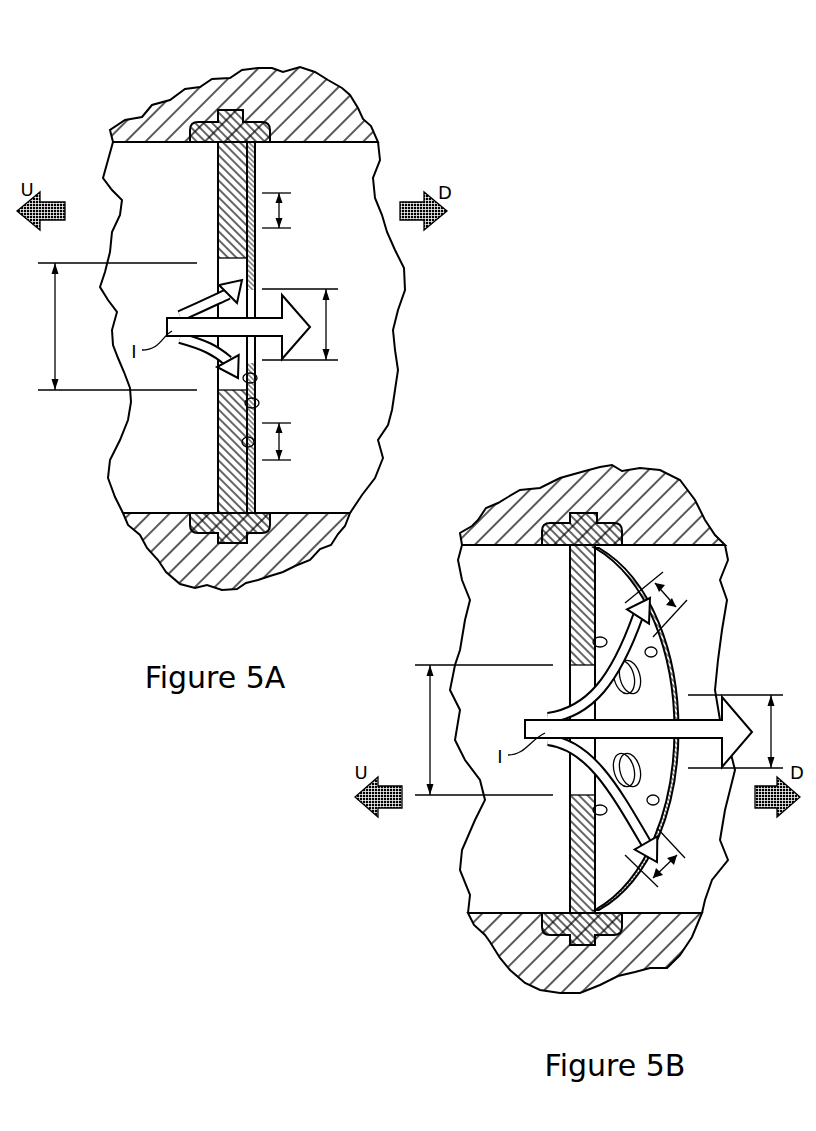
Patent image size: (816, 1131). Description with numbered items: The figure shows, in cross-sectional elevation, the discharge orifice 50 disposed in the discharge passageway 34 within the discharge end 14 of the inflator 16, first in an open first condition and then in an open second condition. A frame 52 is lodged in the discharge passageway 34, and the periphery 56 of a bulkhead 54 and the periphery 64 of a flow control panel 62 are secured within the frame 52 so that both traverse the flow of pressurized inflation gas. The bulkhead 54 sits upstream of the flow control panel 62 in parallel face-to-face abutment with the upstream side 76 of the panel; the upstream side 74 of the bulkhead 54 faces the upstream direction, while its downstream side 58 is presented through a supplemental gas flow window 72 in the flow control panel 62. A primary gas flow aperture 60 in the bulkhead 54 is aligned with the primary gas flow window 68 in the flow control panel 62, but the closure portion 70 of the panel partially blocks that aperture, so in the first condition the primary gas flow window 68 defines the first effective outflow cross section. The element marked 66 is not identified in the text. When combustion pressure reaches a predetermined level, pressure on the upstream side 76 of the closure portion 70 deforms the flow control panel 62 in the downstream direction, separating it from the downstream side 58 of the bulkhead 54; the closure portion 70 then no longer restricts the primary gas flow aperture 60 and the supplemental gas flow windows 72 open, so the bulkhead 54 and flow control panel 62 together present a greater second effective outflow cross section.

In FIG. 5A, the discharge end 14 is at (180, 110).
In FIG. 5B, the discharge end 14 is at (532, 522).
In FIG. 5A, the inflator 16 is at (240, 46).
In FIG. 5B, the inflator 16 is at (603, 408).
In FIG. 5A, the discharge passageway 34 is at (153, 249).
In FIG. 5B, the discharge passageway 34 is at (493, 657).
In FIG. 5A, the discharge orifice 50 is at (213, 103).
In FIG. 5B, the discharge orifice 50 is at (592, 496).
In FIG. 5A, the frame 52 is at (236, 126).
In FIG. 5B, the frame 52 is at (585, 534).
In FIG. 5A, the bulkhead 54 is at (226, 188).
In FIG. 5B, the bulkhead 54 is at (566, 596).
In FIG. 5A, the periphery 56 is at (232, 162).
In FIG. 5B, the periphery 56 is at (582, 566).
In FIG. 5A, the downstream side 58 is at (222, 222).
In FIG. 5B, the downstream side 58 is at (588, 640).
In FIG. 5A, the primary gas flow aperture 60 is at (114, 326).
In FIG. 5B, the primary gas flow aperture 60 is at (479, 730).
In FIG. 5A, the flow control panel 62 is at (267, 242).
In FIG. 5B, the flow control panel 62 is at (685, 682).
In FIG. 5A, the periphery 64 is at (260, 155).
In FIG. 5B, the periphery 64 is at (605, 560).
In FIG. 5A, the gap 66 is at (218, 407).
In FIG. 5A, the primary gas flow window 68 is at (306, 324).
In FIG. 5B, the primary gas flow window 68 is at (741, 731).
In FIG. 5A, the closure portion 70 is at (266, 273).
In FIG. 5A, the supplemental gas flow window 72 is at (285, 326).
In FIG. 5B, the supplemental gas flow window 72 is at (641, 680).
In FIG. 5A, the upstream side 74 is at (220, 213).
In FIG. 5B, the upstream side 74 is at (570, 625).
In FIG. 5A, the upstream side 76 is at (260, 390).
In FIG. 5B, the upstream side 76 is at (655, 650).